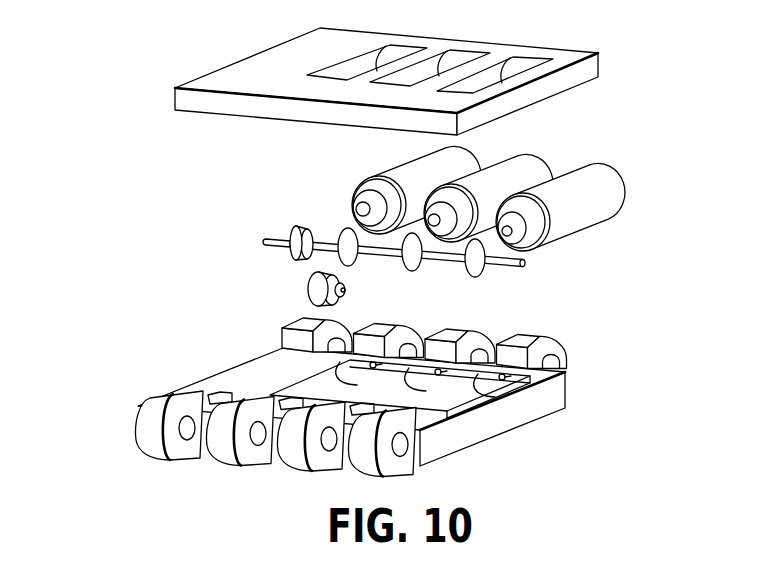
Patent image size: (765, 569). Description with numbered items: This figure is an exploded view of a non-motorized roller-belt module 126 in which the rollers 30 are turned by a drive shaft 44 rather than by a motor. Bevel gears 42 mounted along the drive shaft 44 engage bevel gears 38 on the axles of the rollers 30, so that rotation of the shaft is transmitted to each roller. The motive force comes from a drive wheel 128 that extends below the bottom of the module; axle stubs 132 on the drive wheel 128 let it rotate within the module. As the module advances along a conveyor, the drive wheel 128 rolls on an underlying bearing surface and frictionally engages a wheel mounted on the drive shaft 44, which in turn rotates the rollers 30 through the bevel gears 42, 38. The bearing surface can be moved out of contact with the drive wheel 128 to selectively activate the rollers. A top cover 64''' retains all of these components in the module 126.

The top cover 64''' is at (386, 74).
The non-motorized roller-belt module 126 is at (100, 150).
The bevel gear 38 is at (359, 198).
The roller 30 is at (598, 222).
The drive shaft 44 is at (517, 267).
The bevel gear 42 is at (413, 265).
The drive wheel 128 is at (316, 301).
The axle stub 132 is at (346, 290).